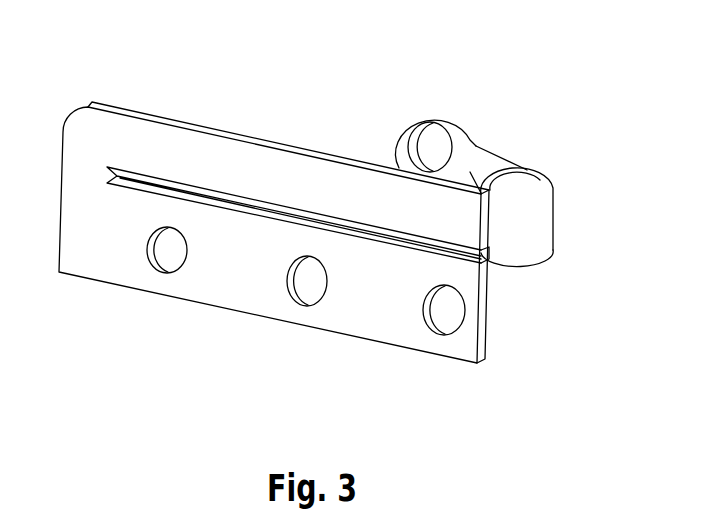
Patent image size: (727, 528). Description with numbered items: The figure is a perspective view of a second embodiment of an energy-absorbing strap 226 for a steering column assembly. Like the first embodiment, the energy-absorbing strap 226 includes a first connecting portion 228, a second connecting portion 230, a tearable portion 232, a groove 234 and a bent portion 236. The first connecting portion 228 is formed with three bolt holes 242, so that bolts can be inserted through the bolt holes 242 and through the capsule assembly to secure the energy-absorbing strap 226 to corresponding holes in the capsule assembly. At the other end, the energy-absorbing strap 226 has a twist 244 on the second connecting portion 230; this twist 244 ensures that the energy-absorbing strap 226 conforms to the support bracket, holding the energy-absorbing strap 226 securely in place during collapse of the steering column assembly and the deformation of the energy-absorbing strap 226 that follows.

The energy-absorbing strap 226 is at (585, 77).
The first connecting portion 228 is at (246, 280).
The second connecting portion 230 is at (472, 127).
The tearable portion 232 is at (203, 153).
The groove 234 is at (422, 247).
The bent portion 236 is at (535, 242).
The bolt holes 242 is at (167, 250).
The twist 244 is at (495, 167).